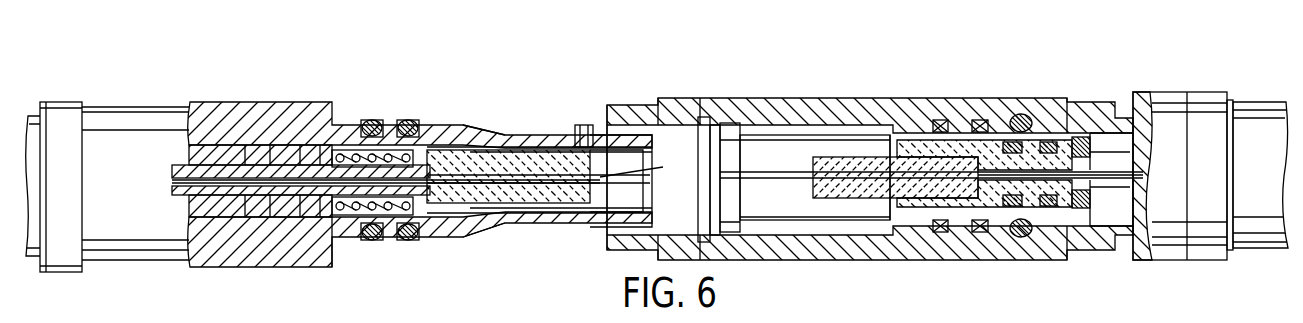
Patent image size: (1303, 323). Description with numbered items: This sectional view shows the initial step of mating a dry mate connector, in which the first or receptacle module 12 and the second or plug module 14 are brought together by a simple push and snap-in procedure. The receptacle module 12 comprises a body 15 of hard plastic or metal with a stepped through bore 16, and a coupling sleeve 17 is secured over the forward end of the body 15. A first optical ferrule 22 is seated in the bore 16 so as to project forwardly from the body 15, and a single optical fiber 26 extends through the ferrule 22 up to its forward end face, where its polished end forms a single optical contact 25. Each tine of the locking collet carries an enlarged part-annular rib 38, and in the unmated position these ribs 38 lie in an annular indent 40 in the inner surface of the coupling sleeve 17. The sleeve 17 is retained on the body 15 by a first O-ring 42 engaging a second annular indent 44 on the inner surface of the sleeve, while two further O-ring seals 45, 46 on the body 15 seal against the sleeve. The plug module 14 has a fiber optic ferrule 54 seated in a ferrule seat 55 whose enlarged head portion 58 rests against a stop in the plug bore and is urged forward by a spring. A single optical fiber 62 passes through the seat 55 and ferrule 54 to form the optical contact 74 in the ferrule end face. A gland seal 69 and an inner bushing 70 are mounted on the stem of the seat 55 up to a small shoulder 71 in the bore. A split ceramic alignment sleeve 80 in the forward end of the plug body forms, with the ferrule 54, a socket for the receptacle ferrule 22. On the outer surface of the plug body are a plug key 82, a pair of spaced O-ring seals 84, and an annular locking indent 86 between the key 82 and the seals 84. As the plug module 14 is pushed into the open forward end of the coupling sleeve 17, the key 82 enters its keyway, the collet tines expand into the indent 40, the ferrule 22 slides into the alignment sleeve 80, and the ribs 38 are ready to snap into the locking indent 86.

The first module 12 is at (1157, 86).
The second module 14 is at (322, 99).
The body 15 is at (1068, 125).
The through bore 16 is at (912, 208).
The coupling sleeve 17 is at (802, 112).
The first optical ferrule 22 is at (840, 188).
The optical contact 25 is at (813, 177).
The single optical fiber 26 is at (1065, 176).
The part-annular rib 38 is at (733, 130).
The annular indent 40 is at (697, 118).
The first O-ring 42 is at (1012, 117).
The second annular indent 44 is at (1024, 117).
The O-ring seal 45 is at (983, 233).
The O-ring seal 46 is at (947, 233).
The fiber optic ferrule 54 is at (530, 192).
The ferrule seat 55 is at (247, 170).
The enlarged head portion 58 is at (438, 157).
The single optical fiber 62 is at (225, 180).
The gland seal 69 is at (287, 207).
The inner bushing 70 is at (327, 240).
The shoulder 71 is at (357, 125).
The optical contact 74 is at (645, 168).
The split ceramic alignment sleeve 80 is at (598, 203).
The plug key 82 is at (587, 127).
The O-ring seals 84 is at (408, 238).
The annular locking indent 86 is at (488, 135).